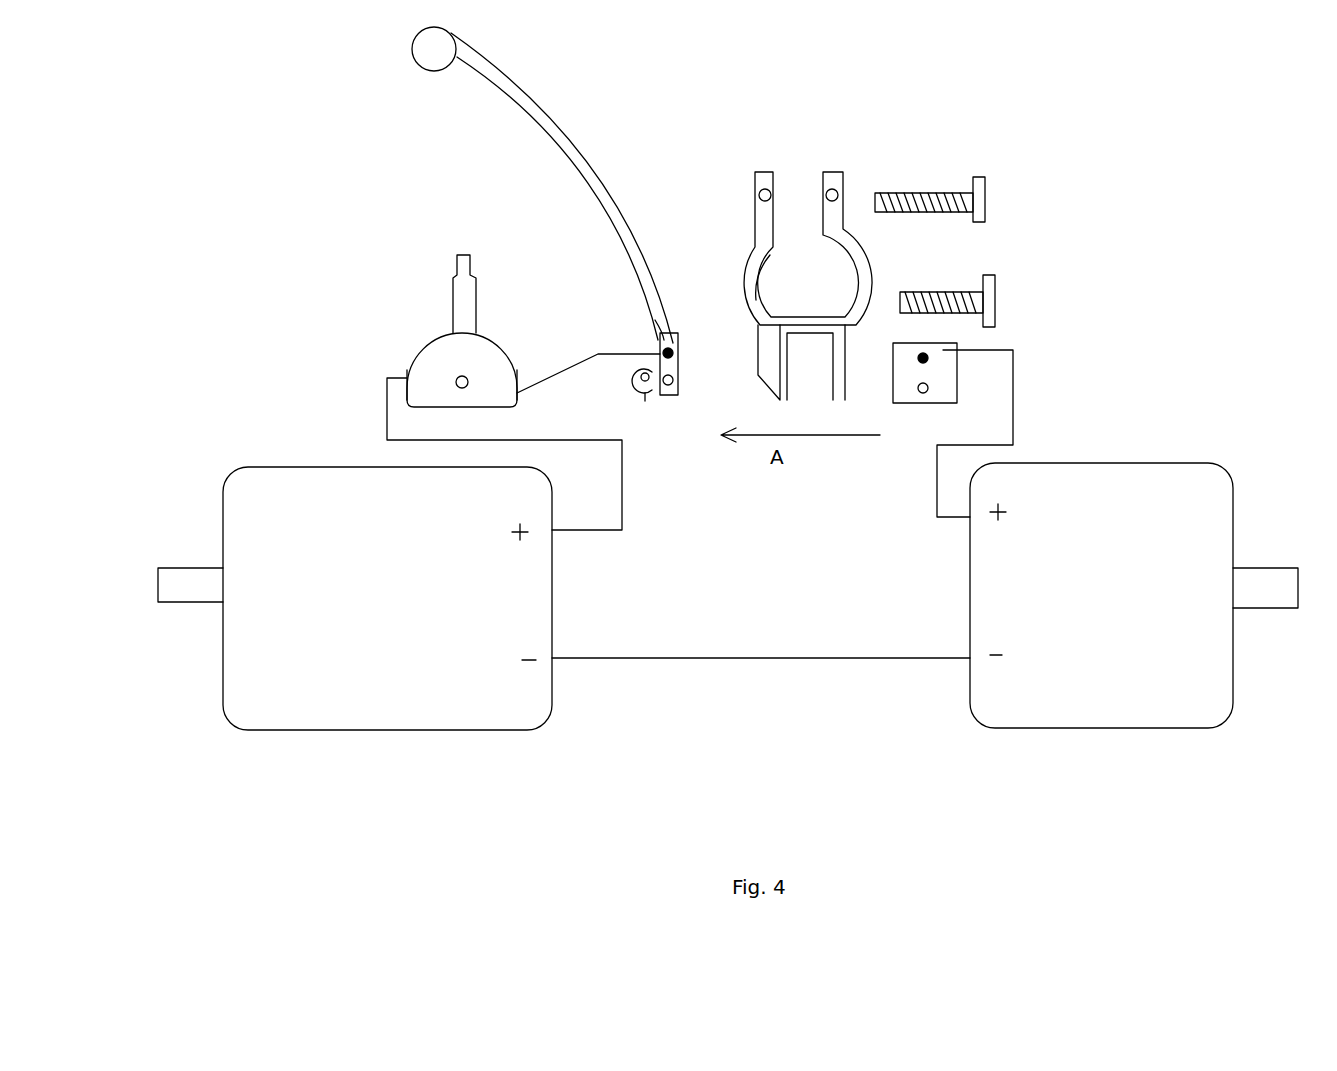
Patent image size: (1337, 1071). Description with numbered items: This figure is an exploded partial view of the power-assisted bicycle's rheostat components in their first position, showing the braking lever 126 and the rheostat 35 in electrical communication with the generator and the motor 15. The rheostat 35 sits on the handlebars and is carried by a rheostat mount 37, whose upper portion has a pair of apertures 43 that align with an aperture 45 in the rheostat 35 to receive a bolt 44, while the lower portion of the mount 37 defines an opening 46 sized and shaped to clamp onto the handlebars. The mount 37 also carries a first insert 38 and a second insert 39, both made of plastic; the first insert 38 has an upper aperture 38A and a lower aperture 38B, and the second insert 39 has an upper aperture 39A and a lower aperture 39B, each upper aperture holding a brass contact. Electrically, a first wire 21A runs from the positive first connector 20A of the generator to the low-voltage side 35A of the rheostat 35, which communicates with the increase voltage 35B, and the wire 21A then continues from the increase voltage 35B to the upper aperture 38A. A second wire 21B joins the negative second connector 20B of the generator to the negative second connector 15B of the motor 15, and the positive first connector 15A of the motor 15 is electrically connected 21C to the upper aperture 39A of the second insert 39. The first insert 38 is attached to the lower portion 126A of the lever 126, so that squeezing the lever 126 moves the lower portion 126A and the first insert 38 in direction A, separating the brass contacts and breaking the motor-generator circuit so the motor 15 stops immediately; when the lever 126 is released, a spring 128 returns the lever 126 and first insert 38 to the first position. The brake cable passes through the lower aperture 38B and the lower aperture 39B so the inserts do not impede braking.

The braking lever 126 is at (533, 116).
The lower portion of the lever 126A is at (662, 318).
The spring 128 is at (658, 400).
The rheostat 35 is at (455, 268).
The low-voltage side of the rheostat 35A is at (408, 373).
The increase voltage of the rheostat 35B is at (521, 367).
The aperture in the rheostat 45 is at (465, 376).
The first wire 21A is at (566, 365).
The second wire 21B is at (722, 652).
The electrical connection 21C is at (1015, 400).
The first insert 38 is at (676, 346).
The upper aperture of the first insert 38A is at (675, 355).
The lower aperture of the first insert 38B is at (675, 380).
The rheostat mount 37 is at (768, 184).
The apertures 43 is at (759, 194).
The bolt 44 is at (935, 194).
The opening 46 is at (838, 283).
The second insert 39 is at (940, 351).
The upper aperture of the second insert 39A is at (918, 356).
The lower aperture of the second insert 39B is at (918, 390).
The first connector (positive) of the generator 20A is at (515, 530).
The second connector (negative) of the generator 20B is at (522, 660).
The motor 15 is at (1160, 463).
The first connector (positive) of the motor 15A is at (1004, 512).
The second connector (negative) of the motor 15B is at (1005, 650).